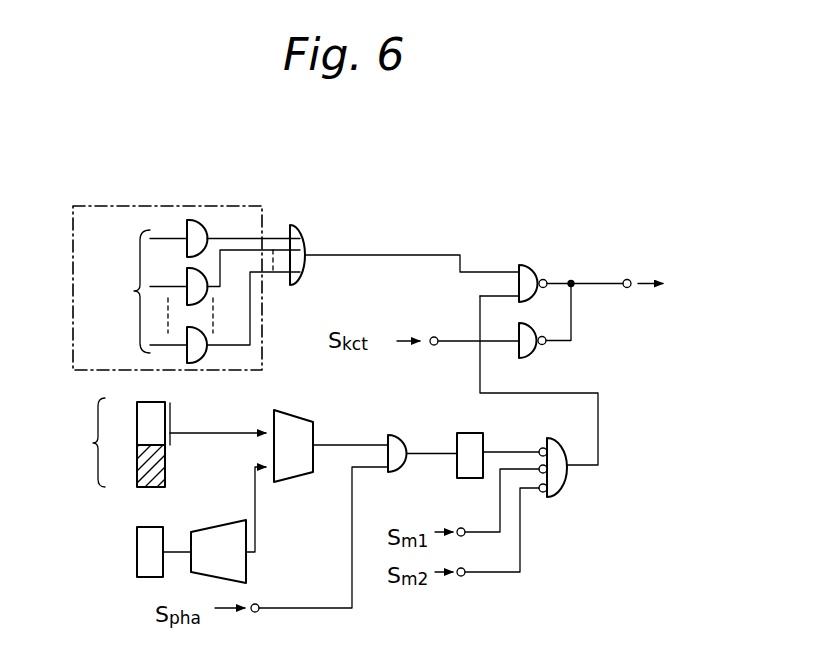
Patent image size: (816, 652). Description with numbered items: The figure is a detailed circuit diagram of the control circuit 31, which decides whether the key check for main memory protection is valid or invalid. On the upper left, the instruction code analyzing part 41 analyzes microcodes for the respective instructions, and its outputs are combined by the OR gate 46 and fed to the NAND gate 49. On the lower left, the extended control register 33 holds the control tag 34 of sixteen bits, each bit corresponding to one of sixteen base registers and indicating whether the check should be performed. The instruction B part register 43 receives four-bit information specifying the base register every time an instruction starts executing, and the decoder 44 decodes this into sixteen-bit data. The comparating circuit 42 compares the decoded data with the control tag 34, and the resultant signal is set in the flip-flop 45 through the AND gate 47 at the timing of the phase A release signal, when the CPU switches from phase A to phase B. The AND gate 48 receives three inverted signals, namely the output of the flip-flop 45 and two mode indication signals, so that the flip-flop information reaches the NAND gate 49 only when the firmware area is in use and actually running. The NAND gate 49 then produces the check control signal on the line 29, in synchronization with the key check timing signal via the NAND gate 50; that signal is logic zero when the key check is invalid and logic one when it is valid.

The control circuit 31 is at (364, 162).
The instruction code analyzing part 41 is at (174, 204).
The OR gate 46 is at (308, 232).
The NAND gate 49 is at (524, 265).
The NAND gate 50 is at (548, 354).
The line 29 is at (605, 280).
The extended control register 33 is at (83, 451).
The control tag 34 is at (157, 413).
The comparating circuit 42 is at (293, 410).
The instruction B part register 43 is at (165, 538).
The decoder 44 is at (246, 563).
The flip-flop 45 is at (455, 468).
The AND gate 47 is at (398, 432).
The AND gate 48 is at (563, 487).